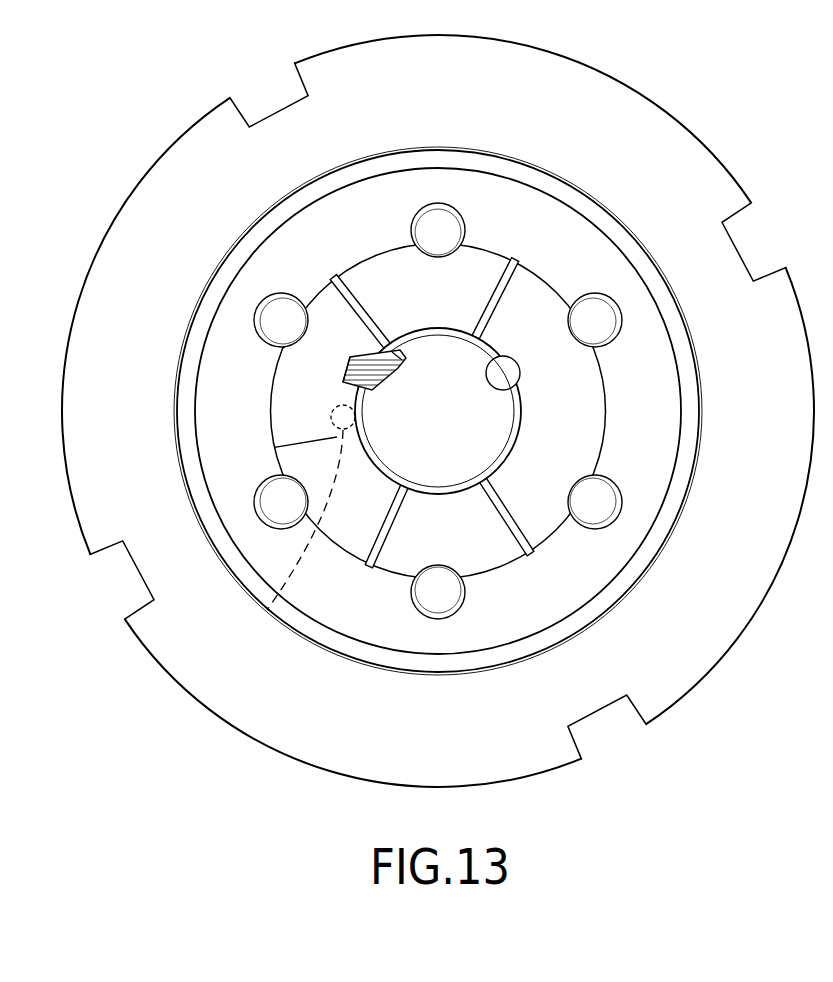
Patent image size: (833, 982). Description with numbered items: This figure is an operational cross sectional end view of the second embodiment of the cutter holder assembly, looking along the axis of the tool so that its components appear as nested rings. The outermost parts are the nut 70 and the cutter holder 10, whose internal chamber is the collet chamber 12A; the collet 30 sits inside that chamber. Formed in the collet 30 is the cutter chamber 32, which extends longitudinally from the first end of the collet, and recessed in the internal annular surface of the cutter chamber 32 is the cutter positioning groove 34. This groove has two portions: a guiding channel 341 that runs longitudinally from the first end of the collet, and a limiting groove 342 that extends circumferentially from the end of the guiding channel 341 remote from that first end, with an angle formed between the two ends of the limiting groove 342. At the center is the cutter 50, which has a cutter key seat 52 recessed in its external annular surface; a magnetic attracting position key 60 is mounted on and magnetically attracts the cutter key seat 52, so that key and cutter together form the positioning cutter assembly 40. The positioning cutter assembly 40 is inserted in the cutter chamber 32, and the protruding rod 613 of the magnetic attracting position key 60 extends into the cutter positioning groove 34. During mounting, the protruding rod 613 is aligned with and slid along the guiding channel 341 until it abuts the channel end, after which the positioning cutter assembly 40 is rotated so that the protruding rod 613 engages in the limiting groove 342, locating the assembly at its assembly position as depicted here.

The cutter holder 10 is at (586, 591).
The collet chamber 12A is at (590, 510).
The collet 30 is at (544, 276).
The cutter chamber 32 is at (520, 398).
The cutter positioning groove 34 is at (288, 418).
The positioning cutter assembly 40 is at (442, 495).
The cutter 50 is at (443, 358).
The cutter key seat 52 is at (393, 355).
The magnetic attracting position key 60 is at (328, 383).
The nut 70 is at (250, 702).
The guiding channel 341 is at (268, 608).
The limiting groove 342 is at (337, 437).
The protruding rod 613 is at (355, 365).